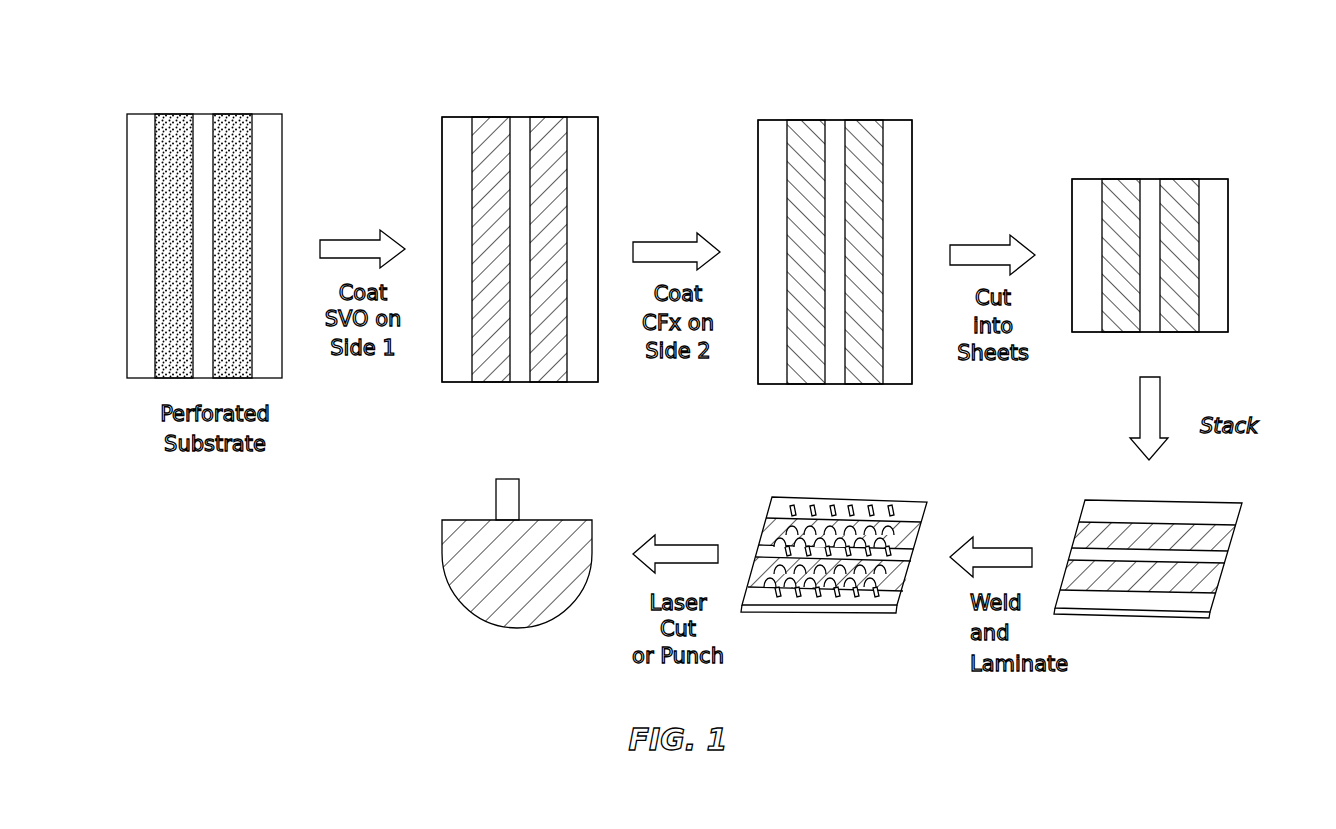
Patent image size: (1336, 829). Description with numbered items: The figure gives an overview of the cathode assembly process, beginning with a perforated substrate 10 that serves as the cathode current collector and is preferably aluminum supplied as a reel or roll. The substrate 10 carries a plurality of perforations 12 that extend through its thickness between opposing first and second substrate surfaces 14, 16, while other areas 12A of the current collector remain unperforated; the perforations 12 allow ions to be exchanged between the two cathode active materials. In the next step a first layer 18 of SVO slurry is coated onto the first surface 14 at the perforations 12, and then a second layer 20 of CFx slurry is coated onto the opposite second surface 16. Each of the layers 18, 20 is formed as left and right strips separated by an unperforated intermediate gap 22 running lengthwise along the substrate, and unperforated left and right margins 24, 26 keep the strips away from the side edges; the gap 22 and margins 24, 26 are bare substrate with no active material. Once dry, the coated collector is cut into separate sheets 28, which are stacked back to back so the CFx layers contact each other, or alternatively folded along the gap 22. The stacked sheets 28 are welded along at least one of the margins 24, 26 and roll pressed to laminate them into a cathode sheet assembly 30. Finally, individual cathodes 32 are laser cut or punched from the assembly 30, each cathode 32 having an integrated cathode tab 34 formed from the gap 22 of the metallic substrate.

The perforated substrate 10 is at (270, 138).
The perforations 12 is at (177, 148).
The unperforated areas 12A is at (140, 272).
The first substrate surface 14 is at (460, 173).
The second substrate surface 16 is at (772, 193).
The first layer 18 is at (487, 155).
The second layer 20 is at (805, 150).
The intermediate gap 22 is at (517, 370).
The left margin 24 is at (455, 363).
The right margin 26 is at (582, 367).
The sheet 28 is at (1085, 238).
The cathode sheet assembly 30 is at (843, 600).
The cathode 32 is at (535, 610).
The cathode tab 34 is at (866, 513).